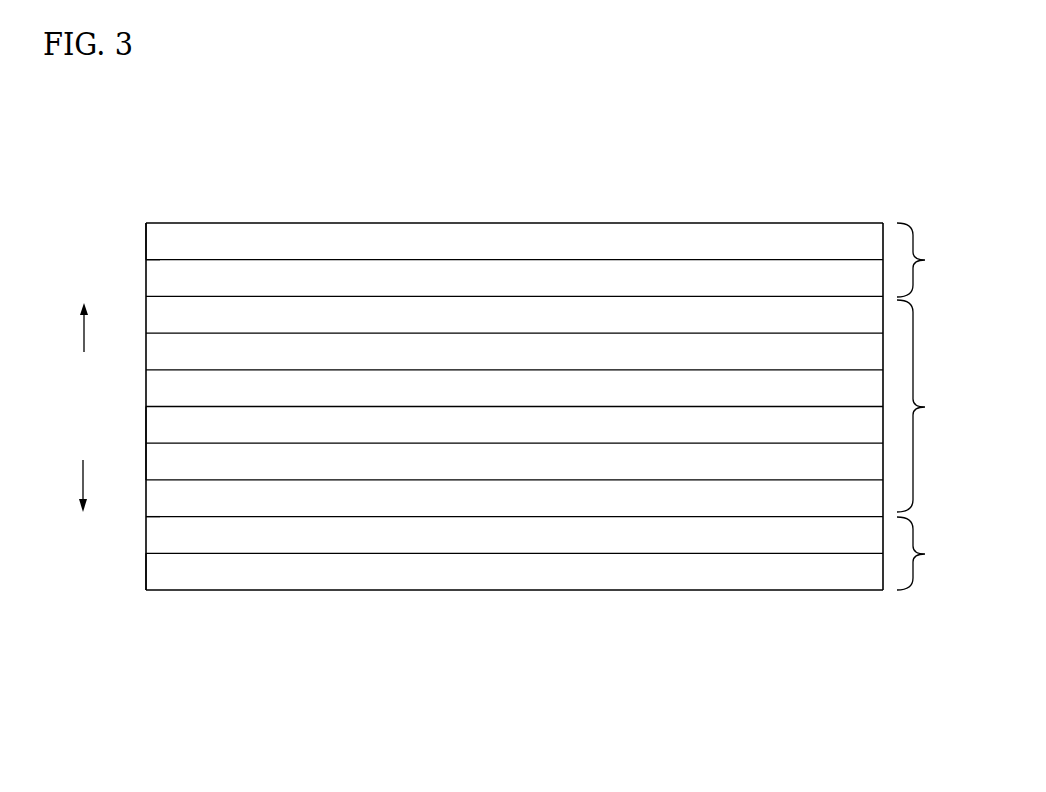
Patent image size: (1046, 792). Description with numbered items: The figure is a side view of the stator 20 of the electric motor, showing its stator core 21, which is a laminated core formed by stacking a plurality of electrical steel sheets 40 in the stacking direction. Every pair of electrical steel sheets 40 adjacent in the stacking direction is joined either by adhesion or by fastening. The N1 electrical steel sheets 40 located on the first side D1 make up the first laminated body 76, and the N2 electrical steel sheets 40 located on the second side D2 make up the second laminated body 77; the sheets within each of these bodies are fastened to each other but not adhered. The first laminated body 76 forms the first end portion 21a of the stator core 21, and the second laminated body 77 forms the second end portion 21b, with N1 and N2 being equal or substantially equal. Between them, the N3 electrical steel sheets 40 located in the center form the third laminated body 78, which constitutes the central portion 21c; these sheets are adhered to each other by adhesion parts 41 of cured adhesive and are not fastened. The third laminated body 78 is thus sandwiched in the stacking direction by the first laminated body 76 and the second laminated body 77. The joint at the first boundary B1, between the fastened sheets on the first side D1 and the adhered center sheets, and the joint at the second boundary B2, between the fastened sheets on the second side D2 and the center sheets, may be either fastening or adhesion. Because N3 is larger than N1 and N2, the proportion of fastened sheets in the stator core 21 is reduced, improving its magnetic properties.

The stator 20 is at (842, 145).
The stator core 21 is at (213, 209).
The first end portion 21a is at (152, 227).
The second end portion 21b is at (168, 583).
The central portion 21c is at (148, 393).
The electrical steel sheet 40 is at (718, 280).
The adhesion part 41 is at (322, 258).
The first laminated body 76 is at (118, 232).
The second laminated body 77 is at (118, 566).
The third laminated body 78 is at (118, 444).
The first boundary B1 is at (132, 260).
The second boundary B2 is at (132, 518).
The first side D1 is at (100, 327).
The second side D2 is at (99, 486).
The N1 electrical steel sheets N1 is at (928, 260).
The N2 electrical steel sheets N2 is at (928, 553).
The N3 electrical steel sheets N3 is at (928, 406).